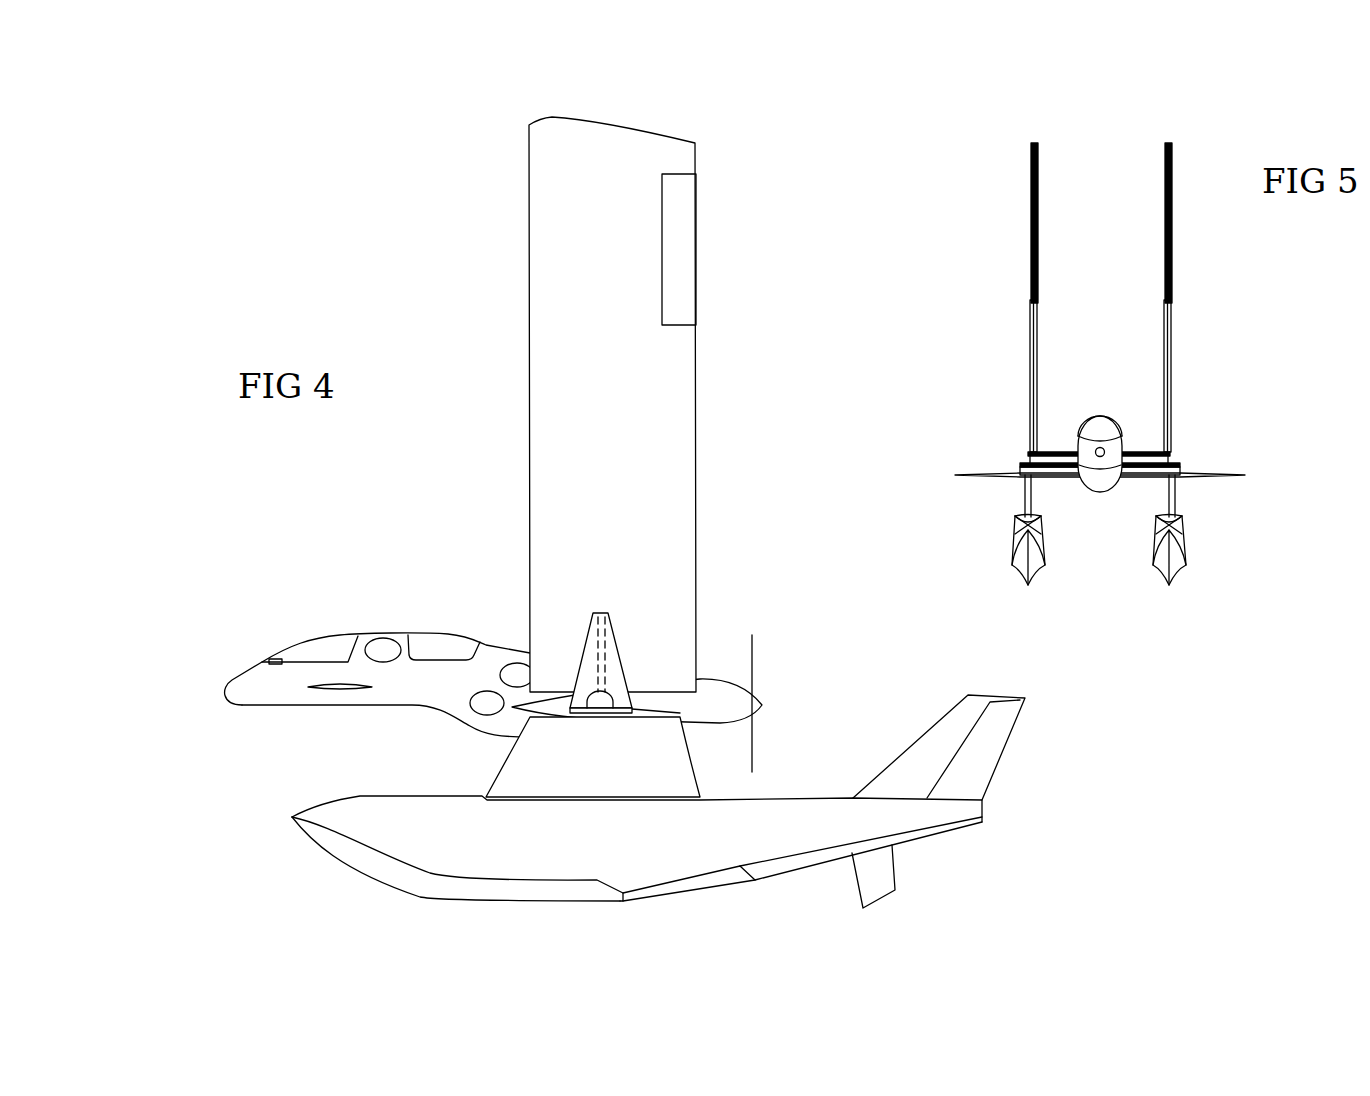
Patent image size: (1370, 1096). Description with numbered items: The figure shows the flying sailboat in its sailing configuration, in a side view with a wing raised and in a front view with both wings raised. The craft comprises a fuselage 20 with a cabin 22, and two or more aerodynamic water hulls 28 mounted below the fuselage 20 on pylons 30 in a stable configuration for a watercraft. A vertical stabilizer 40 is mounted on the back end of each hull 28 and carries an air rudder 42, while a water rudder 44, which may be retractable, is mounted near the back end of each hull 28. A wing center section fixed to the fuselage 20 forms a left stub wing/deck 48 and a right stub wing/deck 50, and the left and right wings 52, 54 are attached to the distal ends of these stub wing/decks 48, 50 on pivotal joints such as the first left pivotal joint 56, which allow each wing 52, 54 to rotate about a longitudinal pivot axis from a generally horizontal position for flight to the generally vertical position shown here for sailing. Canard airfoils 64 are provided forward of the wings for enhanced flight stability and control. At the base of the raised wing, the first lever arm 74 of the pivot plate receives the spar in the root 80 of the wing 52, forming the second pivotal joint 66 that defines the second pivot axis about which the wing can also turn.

In FIG. 4, the fuselage 20 is at (424, 697).
In FIG. 5, the fuselage 20 is at (1100, 483).
In FIG. 5, the cabin 22 is at (1103, 433).
In FIG. 4, the aerodynamic water hull 28 is at (522, 850).
In FIG. 5, the aerodynamic water hull 28 is at (1012, 553).
In FIG. 4, the pylon 30 is at (595, 777).
In FIG. 5, the pylon 30 is at (1023, 501).
In FIG. 4, the vertical stabilizer 40 is at (932, 755).
In FIG. 4, the air rudder 42 is at (982, 745).
In FIG. 4, the water rudder 44 is at (873, 872).
In FIG. 5, the left stub wing/deck 48 is at (1145, 477).
In FIG. 5, the right stub wing/deck 50 is at (1050, 477).
In FIG. 4, the left wing 52 is at (612, 434).
In FIG. 5, the left wing 52 is at (1173, 307).
In FIG. 5, the right wing 54 is at (1029, 307).
In FIG. 4, the first left pivotal joint 56 is at (617, 695).
In FIG. 4, the canard airfoil 64 is at (333, 690).
In FIG. 4, the second pivotal joint 66 is at (582, 634).
In FIG. 4, the first lever arm 74 is at (618, 643).
In FIG. 4, the wing root 80 is at (548, 668).